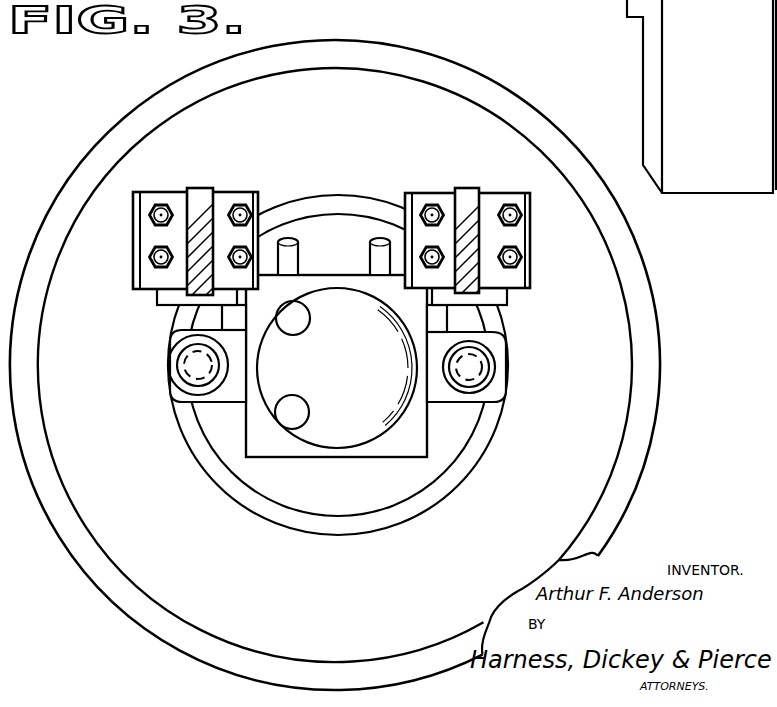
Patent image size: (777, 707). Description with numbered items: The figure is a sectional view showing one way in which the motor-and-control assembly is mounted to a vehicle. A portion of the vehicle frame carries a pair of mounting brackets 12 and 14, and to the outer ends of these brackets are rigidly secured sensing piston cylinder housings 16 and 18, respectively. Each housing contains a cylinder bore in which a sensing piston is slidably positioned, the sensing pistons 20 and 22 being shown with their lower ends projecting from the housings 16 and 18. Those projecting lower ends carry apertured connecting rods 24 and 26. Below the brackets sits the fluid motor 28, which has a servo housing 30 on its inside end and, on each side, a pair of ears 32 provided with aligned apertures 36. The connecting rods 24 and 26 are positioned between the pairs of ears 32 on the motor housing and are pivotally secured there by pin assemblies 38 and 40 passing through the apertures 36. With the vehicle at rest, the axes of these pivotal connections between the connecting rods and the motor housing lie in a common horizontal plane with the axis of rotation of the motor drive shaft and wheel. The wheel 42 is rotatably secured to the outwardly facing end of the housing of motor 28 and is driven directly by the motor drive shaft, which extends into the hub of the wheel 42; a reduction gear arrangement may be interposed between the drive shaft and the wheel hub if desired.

The mounting bracket 12 is at (465, 195).
The mounting bracket 14 is at (208, 193).
The sensing piston cylinder housing 16 is at (528, 247).
The sensing piston cylinder housing 18 is at (133, 226).
The sensing piston 20 is at (493, 298).
The sensing piston 22 is at (167, 293).
The connecting rod 24 is at (478, 323).
The connecting rod 26 is at (192, 318).
The fluid motor 28 is at (257, 440).
The servo housing 30 is at (327, 428).
The ear 32 is at (222, 396).
The aligned apertures 36 is at (185, 372).
The pin assembly 38 is at (475, 370).
The pin assembly 40 is at (196, 353).
The wheel 42 is at (622, 368).